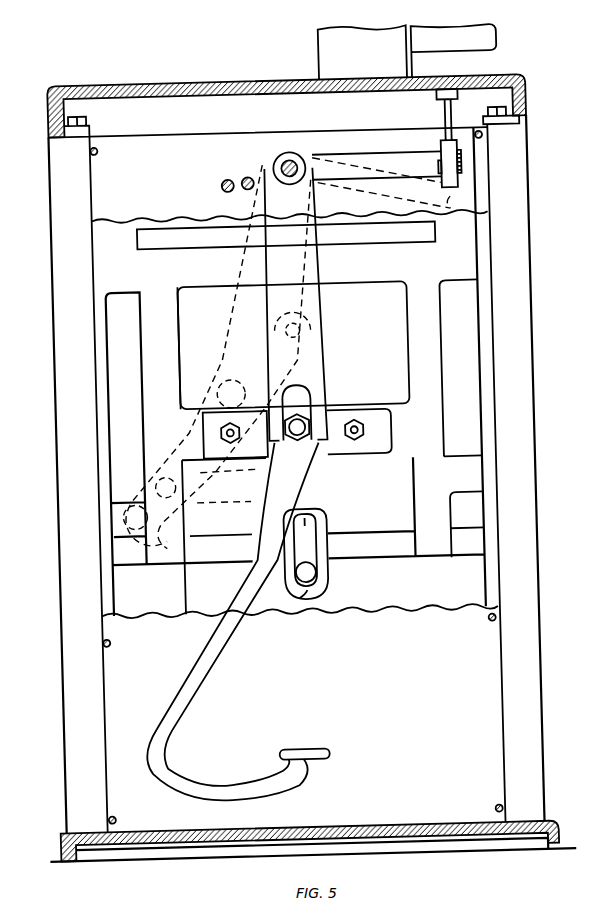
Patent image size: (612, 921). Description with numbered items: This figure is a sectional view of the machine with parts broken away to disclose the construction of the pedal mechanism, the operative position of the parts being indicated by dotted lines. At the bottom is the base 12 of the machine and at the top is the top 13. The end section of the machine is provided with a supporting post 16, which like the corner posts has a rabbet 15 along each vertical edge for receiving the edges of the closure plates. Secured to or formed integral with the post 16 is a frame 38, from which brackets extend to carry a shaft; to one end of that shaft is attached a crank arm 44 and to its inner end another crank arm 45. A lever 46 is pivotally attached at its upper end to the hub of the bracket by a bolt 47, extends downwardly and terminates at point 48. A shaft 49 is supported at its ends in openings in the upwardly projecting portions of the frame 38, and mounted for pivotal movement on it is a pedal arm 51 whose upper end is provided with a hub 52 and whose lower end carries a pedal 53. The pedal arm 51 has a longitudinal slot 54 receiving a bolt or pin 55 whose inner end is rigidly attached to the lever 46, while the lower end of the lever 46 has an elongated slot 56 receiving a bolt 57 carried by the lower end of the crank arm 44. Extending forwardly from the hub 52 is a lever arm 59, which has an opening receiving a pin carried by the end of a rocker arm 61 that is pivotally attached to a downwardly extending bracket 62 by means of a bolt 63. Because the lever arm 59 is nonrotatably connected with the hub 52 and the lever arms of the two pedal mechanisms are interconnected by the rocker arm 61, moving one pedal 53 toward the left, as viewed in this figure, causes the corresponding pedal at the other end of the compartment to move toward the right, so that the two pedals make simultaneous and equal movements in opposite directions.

The base 12 is at (394, 825).
The top 13 is at (198, 83).
The rabbet 15 is at (103, 597).
The supporting post 16 is at (68, 401).
The frame 38 is at (404, 325).
The crank arm 44 is at (296, 543).
The crank arm 45 is at (232, 481).
The lever 46 is at (198, 427).
The bolt 47 is at (303, 338).
The point 48 is at (303, 595).
The shaft 49 is at (289, 166).
The pedal arm 51 is at (319, 297).
The hub 52 is at (301, 152).
The pedal 53 is at (308, 740).
The longitudinal slot 54 is at (301, 417).
The bolt or pin 55 is at (310, 443).
The elongated slot 56 is at (310, 527).
The bolt 57 is at (310, 576).
The lever arm 59 is at (391, 169).
The rocker arm 61 is at (461, 184).
The bracket 62 is at (455, 119).
The bolt 63 is at (470, 169).